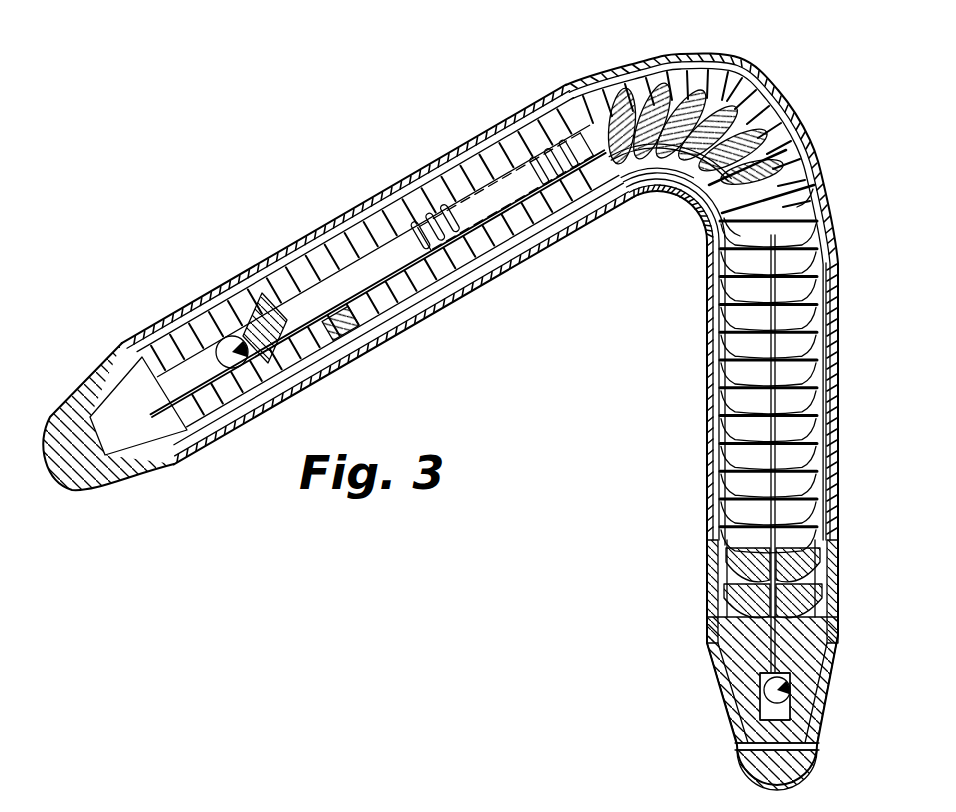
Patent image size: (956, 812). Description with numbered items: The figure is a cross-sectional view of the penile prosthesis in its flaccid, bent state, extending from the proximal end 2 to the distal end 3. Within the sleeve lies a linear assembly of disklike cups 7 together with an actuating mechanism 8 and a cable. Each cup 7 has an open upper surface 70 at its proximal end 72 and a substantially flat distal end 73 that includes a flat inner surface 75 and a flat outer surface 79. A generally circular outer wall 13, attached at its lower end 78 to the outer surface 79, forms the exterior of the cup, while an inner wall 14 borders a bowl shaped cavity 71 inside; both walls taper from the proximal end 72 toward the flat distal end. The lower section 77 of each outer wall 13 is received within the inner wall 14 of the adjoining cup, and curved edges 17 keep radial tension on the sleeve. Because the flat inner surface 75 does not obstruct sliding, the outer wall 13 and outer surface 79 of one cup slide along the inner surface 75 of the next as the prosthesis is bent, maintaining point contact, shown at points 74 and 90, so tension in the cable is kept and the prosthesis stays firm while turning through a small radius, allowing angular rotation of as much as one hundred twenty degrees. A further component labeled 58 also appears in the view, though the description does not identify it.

The proximal end 2 is at (66, 428).
The distal end 3 is at (806, 758).
The cup 7 is at (726, 402).
The actuating mechanism 8 is at (297, 262).
The outer wall 13 is at (775, 138).
The inner wall 14 is at (766, 135).
The curved edges 17 is at (638, 200).
The outer sheath 58 is at (826, 393).
The open upper surface 70 is at (672, 75).
The bowl shaped cavity 71 is at (568, 96).
The proximal end 72 is at (680, 78).
The distal end 73 is at (622, 190).
The point 74 is at (650, 196).
The inner surface 75 is at (578, 78).
The lower section 77 is at (714, 200).
The lower end 78 is at (760, 97).
The outer surface 79 is at (651, 78).
The point 90 is at (688, 196).